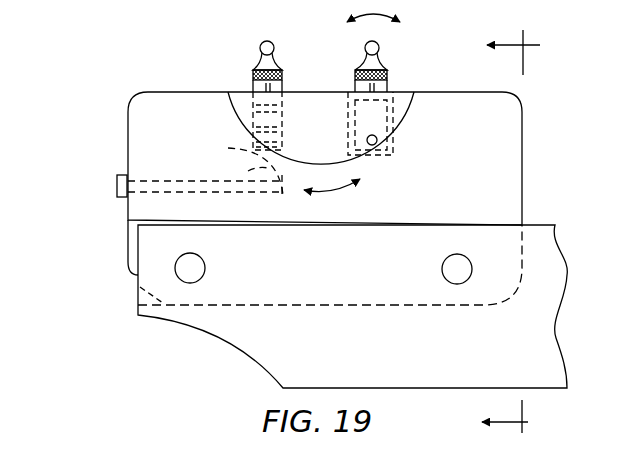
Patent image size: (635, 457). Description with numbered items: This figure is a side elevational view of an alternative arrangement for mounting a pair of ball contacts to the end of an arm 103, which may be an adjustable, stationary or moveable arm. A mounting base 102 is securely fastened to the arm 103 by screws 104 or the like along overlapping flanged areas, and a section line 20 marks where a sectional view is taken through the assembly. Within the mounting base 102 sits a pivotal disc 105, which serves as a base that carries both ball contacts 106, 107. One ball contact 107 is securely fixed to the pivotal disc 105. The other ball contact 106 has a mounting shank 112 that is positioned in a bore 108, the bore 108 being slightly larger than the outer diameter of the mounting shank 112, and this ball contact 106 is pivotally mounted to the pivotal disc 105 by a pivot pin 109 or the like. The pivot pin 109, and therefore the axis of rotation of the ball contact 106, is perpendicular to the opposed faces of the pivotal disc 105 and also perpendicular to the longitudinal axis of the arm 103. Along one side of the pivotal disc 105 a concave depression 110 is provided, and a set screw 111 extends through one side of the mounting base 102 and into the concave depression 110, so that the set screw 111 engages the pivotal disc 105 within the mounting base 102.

The section line 20- 20 is at (518, 232).
The mounting base 102 is at (522, 148).
The arm 103 is at (553, 245).
The screws 104 is at (204, 258).
The pivotal disc 105 is at (398, 172).
The ball contact 106 is at (376, 42).
The ball contact 107 is at (262, 43).
The bore 108 is at (397, 106).
The pivot pin 109 is at (378, 140).
The concave depression 110 is at (228, 148).
The set screw 111 is at (117, 183).
The mounting shank 112 is at (347, 106).